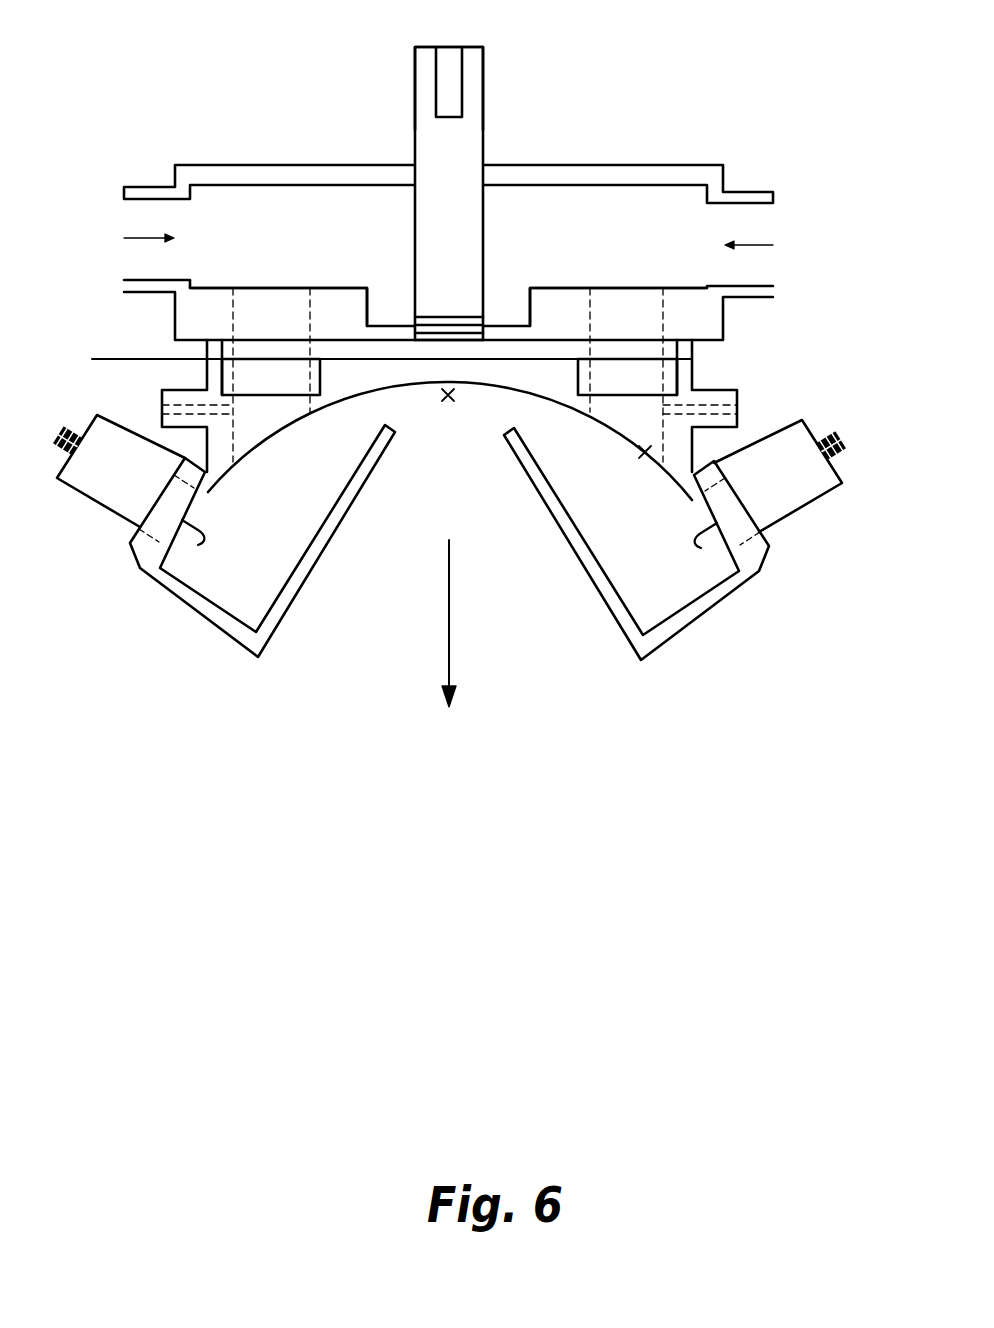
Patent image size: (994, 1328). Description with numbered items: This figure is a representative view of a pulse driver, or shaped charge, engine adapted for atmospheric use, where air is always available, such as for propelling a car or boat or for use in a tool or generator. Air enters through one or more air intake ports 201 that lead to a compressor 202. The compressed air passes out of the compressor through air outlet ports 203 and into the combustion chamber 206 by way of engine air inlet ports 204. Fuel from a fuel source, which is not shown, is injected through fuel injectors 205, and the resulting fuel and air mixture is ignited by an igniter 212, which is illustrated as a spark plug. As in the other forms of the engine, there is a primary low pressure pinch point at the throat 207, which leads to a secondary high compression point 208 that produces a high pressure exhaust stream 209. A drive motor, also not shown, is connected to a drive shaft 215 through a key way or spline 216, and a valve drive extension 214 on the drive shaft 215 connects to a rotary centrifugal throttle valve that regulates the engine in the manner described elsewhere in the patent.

The air intake port 201 is at (770, 225).
The compressor 202 is at (624, 238).
The air outlet port 203 is at (637, 288).
The engine air inlet port 204 is at (644, 455).
The fuel injector 205 is at (737, 413).
The combustion chamber 206 is at (662, 582).
The throat 207 is at (549, 422).
The secondary high compression point 208 is at (476, 468).
The high pressure exhaust stream 209 is at (449, 602).
The igniter 212 is at (816, 446).
The valve drive extension 214 is at (458, 264).
The drive shaft 215 is at (485, 123).
The key way or spline 216 is at (455, 47).